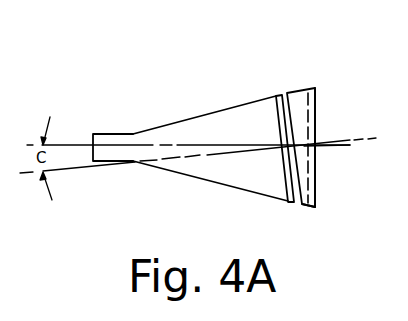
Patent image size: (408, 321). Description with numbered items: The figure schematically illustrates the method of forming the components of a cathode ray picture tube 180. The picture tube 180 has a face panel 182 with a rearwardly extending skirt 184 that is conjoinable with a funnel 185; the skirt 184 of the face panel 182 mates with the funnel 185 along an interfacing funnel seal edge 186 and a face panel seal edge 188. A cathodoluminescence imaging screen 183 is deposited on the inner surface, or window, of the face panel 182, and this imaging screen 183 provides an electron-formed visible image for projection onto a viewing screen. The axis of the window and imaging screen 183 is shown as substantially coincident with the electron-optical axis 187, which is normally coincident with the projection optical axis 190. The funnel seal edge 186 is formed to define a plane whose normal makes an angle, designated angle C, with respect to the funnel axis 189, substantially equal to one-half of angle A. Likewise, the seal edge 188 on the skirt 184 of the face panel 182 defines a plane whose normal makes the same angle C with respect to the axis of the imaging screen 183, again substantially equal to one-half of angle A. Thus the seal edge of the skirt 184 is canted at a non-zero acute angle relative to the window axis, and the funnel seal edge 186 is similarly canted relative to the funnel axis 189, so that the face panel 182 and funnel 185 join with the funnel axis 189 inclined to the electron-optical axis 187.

The picture tube 180 is at (153, 167).
The face panel 182 is at (317, 110).
The cathodoluminescence imaging screen 183 is at (305, 172).
The skirt 184 is at (298, 92).
The funnel 185 is at (170, 123).
The funnel seal edge 186 is at (276, 130).
The electron-optical axis 187 is at (78, 145).
The face panel seal edge 188 is at (291, 106).
The funnel axis 189 is at (205, 155).
The projection optical axis 190 is at (348, 148).